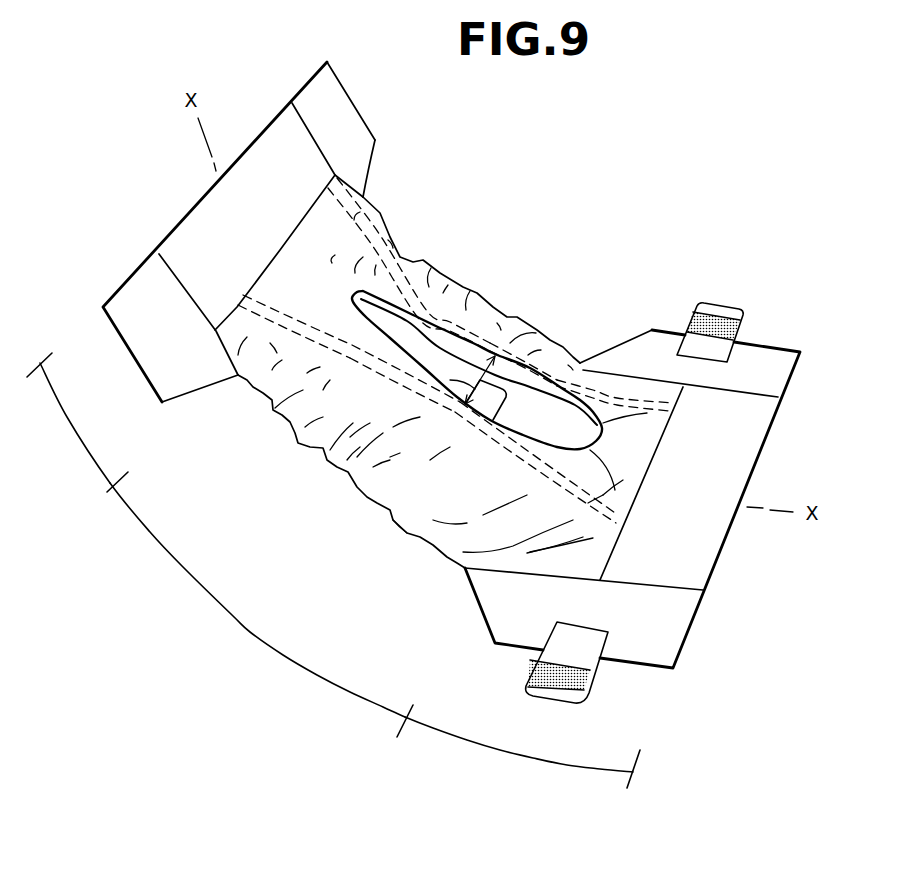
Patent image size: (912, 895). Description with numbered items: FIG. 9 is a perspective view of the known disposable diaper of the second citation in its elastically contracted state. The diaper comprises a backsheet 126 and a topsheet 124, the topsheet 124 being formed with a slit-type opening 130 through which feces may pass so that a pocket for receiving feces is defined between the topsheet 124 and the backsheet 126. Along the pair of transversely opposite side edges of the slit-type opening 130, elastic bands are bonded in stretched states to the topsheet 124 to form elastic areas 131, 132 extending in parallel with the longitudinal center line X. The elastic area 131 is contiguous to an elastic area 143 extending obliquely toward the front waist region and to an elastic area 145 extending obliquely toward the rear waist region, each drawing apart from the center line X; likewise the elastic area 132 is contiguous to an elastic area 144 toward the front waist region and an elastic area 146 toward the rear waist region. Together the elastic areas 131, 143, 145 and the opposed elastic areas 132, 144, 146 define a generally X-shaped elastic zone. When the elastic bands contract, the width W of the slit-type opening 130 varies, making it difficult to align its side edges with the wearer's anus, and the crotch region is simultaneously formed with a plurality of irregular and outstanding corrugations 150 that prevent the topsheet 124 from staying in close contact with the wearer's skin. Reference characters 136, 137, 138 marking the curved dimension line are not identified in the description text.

The topsheet 124 is at (590, 400).
The backsheet 126 is at (530, 403).
The slit-type opening 130 is at (477, 355).
The elastic area 131 is at (437, 310).
The elastic area 132 is at (397, 372).
The arc length 136 is at (232, 615).
The first arc segment 137 is at (65, 417).
The second arc segment 138 is at (473, 745).
The elastic area 143 is at (365, 237).
The elastic area 144 is at (282, 312).
The elastic area 145 is at (657, 410).
The elastic area 146 is at (614, 520).
The corrugations 150 is at (421, 520).